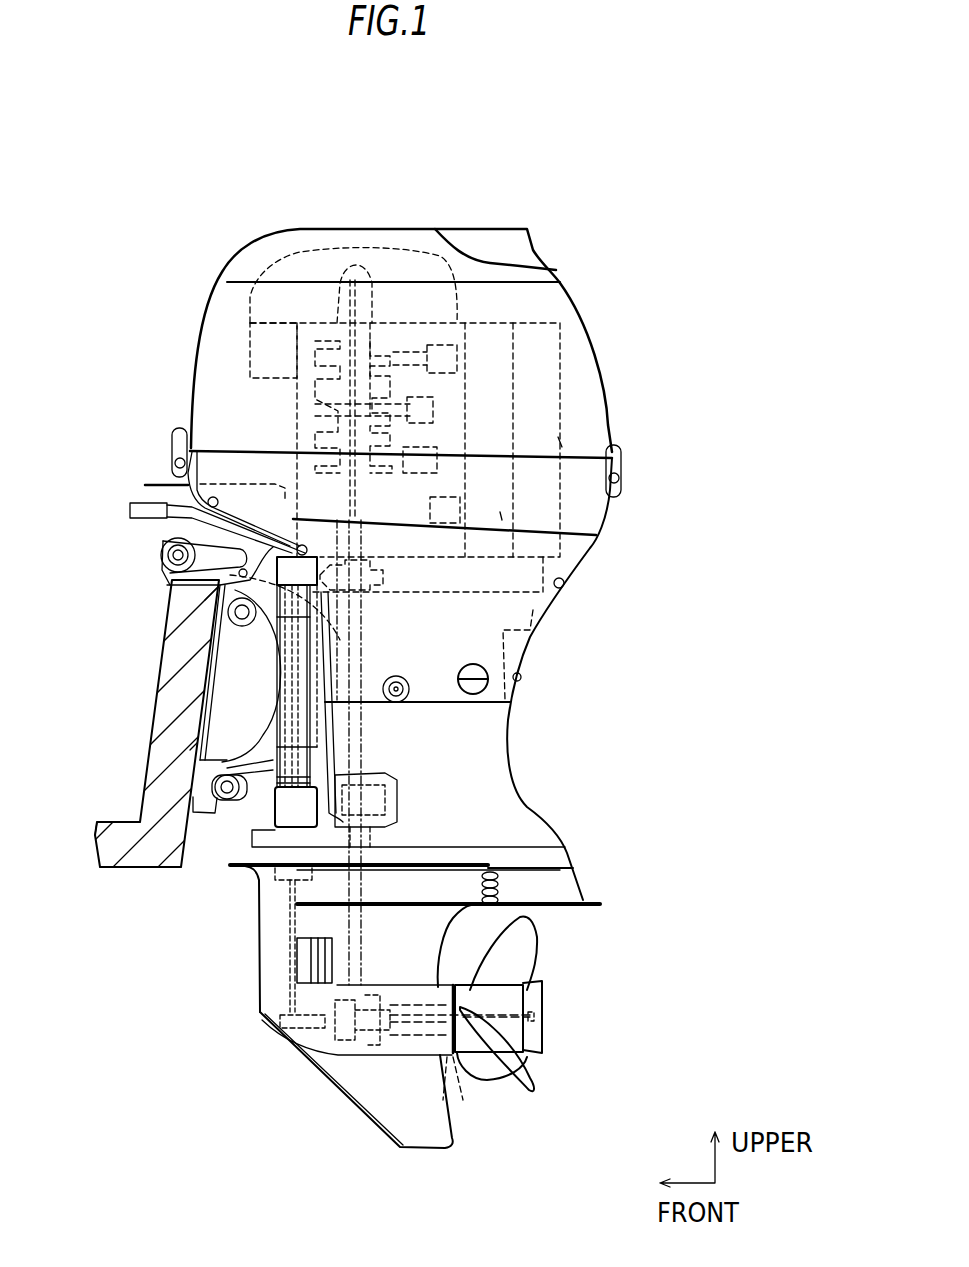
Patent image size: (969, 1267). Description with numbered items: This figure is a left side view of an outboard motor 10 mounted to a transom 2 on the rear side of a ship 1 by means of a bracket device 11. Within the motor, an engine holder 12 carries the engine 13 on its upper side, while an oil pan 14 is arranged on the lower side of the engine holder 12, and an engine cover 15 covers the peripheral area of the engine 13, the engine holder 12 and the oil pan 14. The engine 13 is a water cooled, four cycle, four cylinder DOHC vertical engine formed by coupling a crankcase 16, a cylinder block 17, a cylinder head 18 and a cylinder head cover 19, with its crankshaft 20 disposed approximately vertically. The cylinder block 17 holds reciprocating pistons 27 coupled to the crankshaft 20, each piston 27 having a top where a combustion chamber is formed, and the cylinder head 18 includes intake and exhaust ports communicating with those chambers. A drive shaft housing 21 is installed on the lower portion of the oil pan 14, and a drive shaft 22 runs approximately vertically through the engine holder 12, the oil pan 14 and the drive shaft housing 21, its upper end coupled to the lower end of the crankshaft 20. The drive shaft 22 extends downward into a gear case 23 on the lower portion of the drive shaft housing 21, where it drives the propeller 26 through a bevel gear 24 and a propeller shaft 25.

The ship 1 is at (133, 867).
The transom 2 is at (155, 685).
The outboard motor 10 is at (562, 258).
The bracket device 11 is at (235, 655).
The engine holder 12 is at (567, 580).
The engine 13 is at (568, 383).
The oil pan 14 is at (547, 620).
The engine cover 15 is at (605, 388).
The crankcase 16 is at (305, 340).
The cylinder block 17 is at (415, 323).
The cylinder head 18 is at (500, 512).
The cylinder head cover 19 is at (558, 437).
The crankshaft 20 is at (320, 400).
The drive shaft housing 21 is at (508, 754).
The drive shaft 22 is at (330, 705).
The gear case 23 is at (262, 1008).
The bevel gear 24 is at (352, 1030).
The propeller shaft 25 is at (433, 1047).
The propeller 26 is at (537, 953).
The piston 27 is at (442, 352).